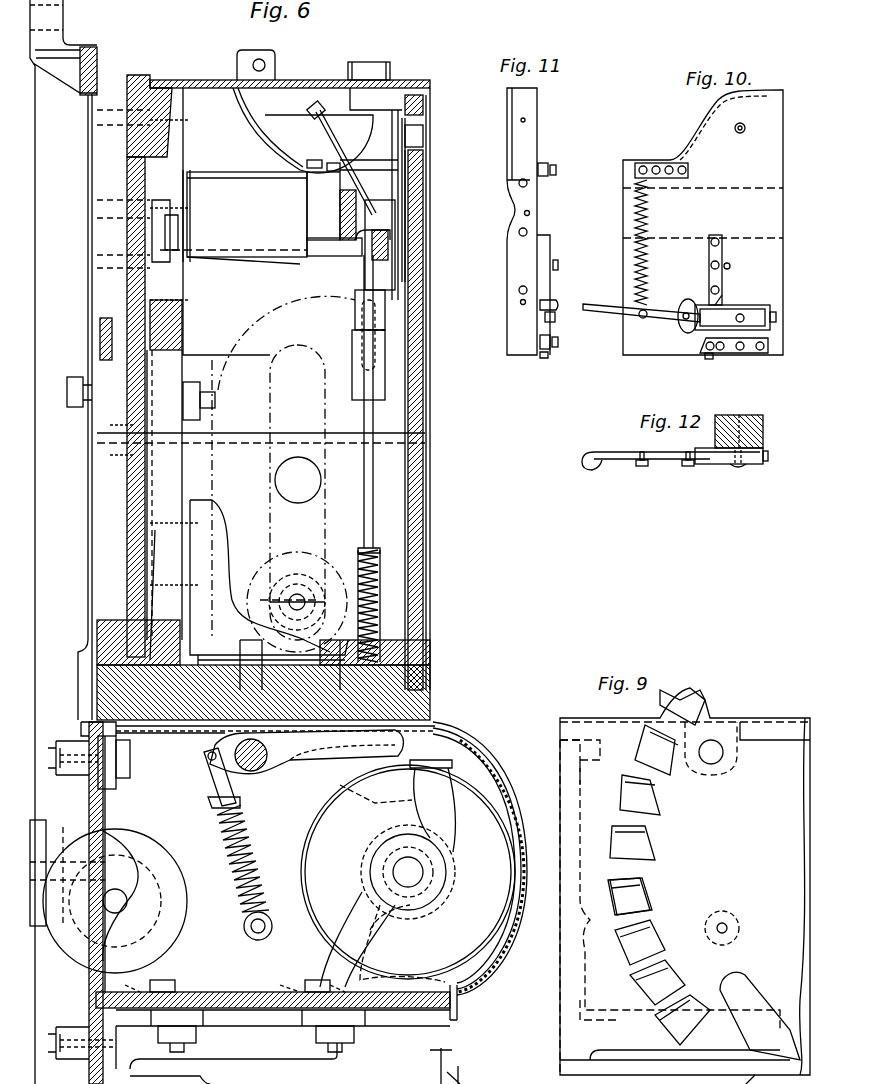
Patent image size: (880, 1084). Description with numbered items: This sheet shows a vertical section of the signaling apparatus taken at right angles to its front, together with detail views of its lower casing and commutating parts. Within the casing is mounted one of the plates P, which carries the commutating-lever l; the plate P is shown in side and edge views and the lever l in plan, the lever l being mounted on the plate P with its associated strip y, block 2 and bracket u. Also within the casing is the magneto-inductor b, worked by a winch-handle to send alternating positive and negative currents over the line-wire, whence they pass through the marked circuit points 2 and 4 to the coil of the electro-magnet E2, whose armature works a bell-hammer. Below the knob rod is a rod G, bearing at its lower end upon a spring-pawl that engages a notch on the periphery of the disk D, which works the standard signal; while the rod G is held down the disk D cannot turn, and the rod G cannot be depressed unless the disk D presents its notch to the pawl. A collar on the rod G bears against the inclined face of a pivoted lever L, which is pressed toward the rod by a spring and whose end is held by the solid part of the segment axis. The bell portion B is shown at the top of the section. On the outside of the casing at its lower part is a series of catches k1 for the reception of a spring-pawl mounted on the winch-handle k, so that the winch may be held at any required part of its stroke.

In FIG. 6, the plate P is at (226, 221).
In FIG. 10, the plate P is at (703, 222).
In FIG. 6, the bowl / bell B is at (303, 130).
In FIG. 6, the electro-magnet E2 is at (261, 226).
In FIG. 6, the rod G is at (369, 458).
In FIG. 6, the inductor b is at (297, 597).
In FIG. 6, the disk D is at (387, 867).
In FIG. 11, the lever L is at (527, 221).
In FIG. 11, the circuit point 4 is at (547, 162).
In FIG. 10, the circuit point 4 is at (661, 163).
In FIG. 11, the commutating-lever l is at (550, 312).
In FIG. 10, the commutating-lever l is at (641, 316).
In FIG. 12, the commutating-lever l is at (671, 461).
In FIG. 11, the bracket u is at (550, 351).
In FIG. 10, the bracket u is at (734, 353).
In FIG. 10, the contact strip y is at (720, 270).
In FIG. 10, the circuit point 2 is at (735, 317).
In FIG. 12, the circuit point 2 is at (731, 457).
In FIG. 9, the winch-handle k is at (659, 867).
In FIG. 9, the catches k1 is at (631, 896).